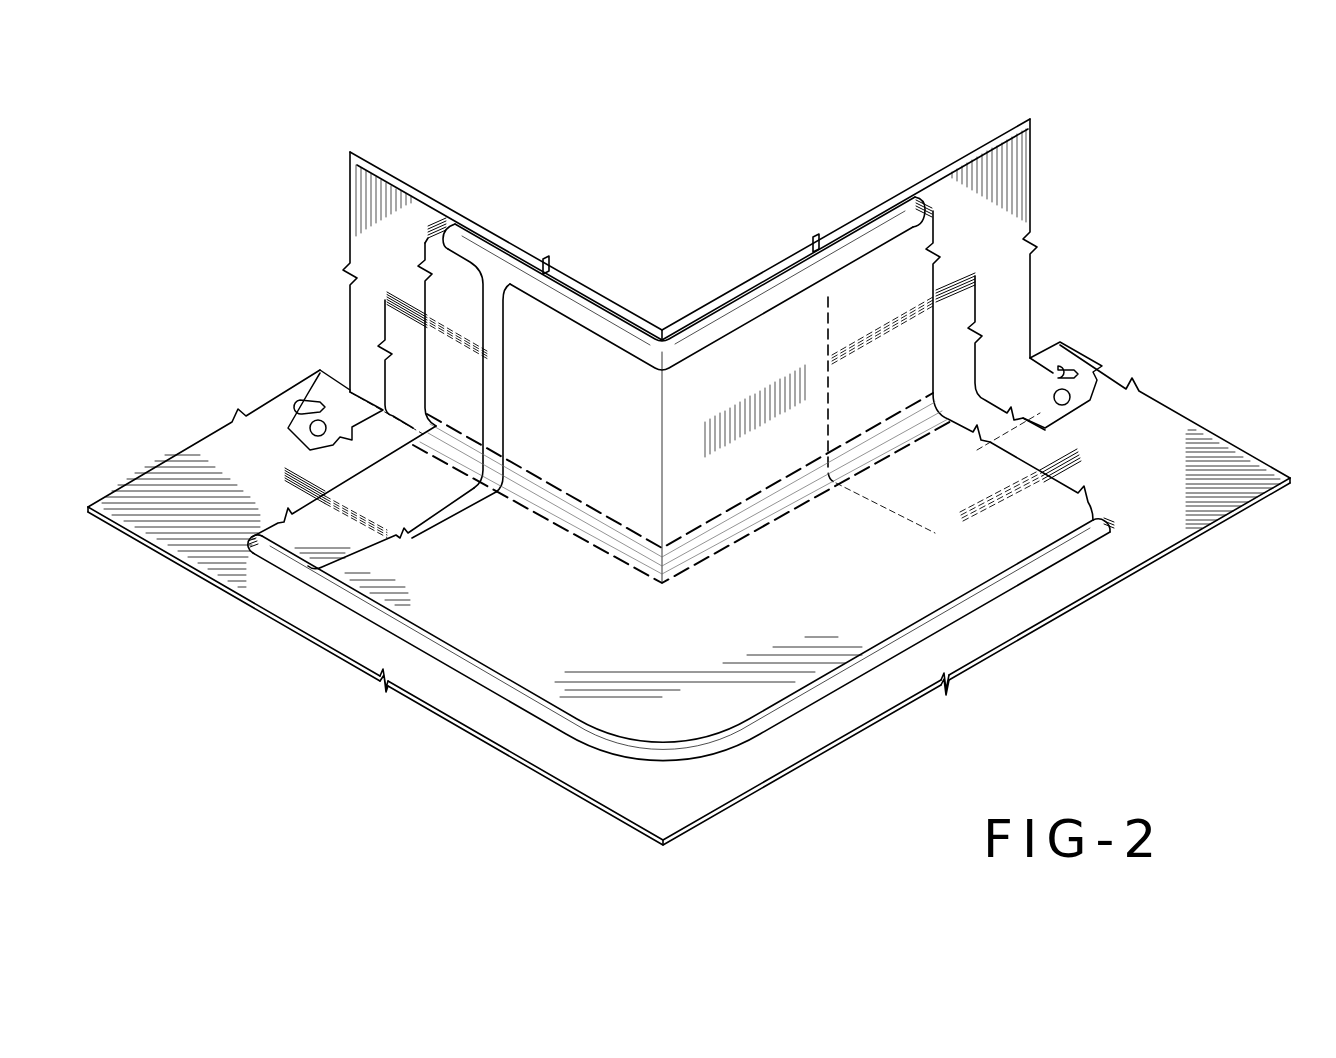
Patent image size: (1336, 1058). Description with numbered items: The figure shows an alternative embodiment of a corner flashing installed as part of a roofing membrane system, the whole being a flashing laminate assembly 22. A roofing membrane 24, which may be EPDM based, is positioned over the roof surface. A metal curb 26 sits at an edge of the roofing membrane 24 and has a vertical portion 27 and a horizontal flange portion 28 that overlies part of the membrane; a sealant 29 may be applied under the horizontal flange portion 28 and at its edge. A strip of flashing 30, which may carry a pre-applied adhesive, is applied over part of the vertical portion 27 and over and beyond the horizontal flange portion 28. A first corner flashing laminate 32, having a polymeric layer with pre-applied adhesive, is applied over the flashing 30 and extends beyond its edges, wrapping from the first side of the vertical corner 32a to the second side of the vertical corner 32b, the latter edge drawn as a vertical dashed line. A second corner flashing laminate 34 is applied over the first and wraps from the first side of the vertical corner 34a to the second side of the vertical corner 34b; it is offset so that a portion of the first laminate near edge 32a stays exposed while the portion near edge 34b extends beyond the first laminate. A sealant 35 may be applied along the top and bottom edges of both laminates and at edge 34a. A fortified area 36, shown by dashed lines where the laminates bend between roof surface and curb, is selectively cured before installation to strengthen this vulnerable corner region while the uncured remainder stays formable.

The flashing laminate assembly 22 is at (701, 258).
The roofing membrane 24 is at (1213, 462).
The metal curb 26 is at (1032, 183).
The vertical portion 27 is at (378, 228).
The horizontal flange portion 28 is at (350, 410).
The sealant 29 is at (1072, 376).
The strip of flashing 30 is at (963, 313).
The first corner flashing laminate 32 is at (463, 288).
The first side of the vertical corner 32a is at (424, 245).
The second side of the vertical corner 32b is at (829, 305).
The second corner flashing laminate 34 is at (818, 617).
The first side of the vertical corner 34a is at (372, 551).
The second side of the vertical corner 34b is at (1087, 496).
The sealant 35 is at (595, 325).
The fortified area 36 is at (570, 534).